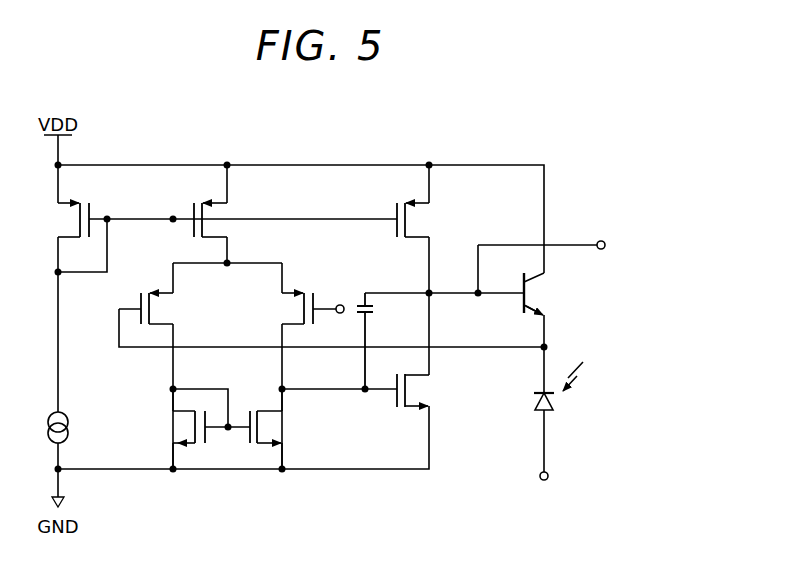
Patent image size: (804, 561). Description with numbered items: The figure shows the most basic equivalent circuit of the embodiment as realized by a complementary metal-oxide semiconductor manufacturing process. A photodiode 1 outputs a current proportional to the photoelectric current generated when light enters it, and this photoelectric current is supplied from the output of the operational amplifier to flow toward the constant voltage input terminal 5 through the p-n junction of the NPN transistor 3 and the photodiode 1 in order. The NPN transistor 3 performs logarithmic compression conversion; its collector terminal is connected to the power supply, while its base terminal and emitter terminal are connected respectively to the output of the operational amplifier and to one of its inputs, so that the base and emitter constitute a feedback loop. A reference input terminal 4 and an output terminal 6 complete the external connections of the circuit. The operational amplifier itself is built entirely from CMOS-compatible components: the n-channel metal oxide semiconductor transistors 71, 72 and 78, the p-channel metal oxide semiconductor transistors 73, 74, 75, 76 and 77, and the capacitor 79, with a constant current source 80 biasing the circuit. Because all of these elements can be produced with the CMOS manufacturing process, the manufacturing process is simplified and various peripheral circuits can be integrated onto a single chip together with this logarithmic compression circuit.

The photodiode 1 is at (534, 399).
The NPN transistor 3 is at (545, 294).
The reference input terminal 4 is at (548, 479).
The constant voltage input terminal 5 is at (339, 305).
The output terminal 6 is at (604, 242).
The NMOS transistor 71 is at (177, 429).
The NMOS transistor 72 is at (272, 429).
The PMOS transistor 73 is at (165, 310).
The PMOS transistor 74 is at (292, 310).
The PMOS transistor 75 is at (57, 217).
The PMOS transistor 76 is at (228, 212).
The PMOS transistor 77 is at (415, 221).
The NMOS transistor 78 is at (420, 393).
The capacitor 79 is at (378, 311).
The constant current source 80 is at (48, 414).